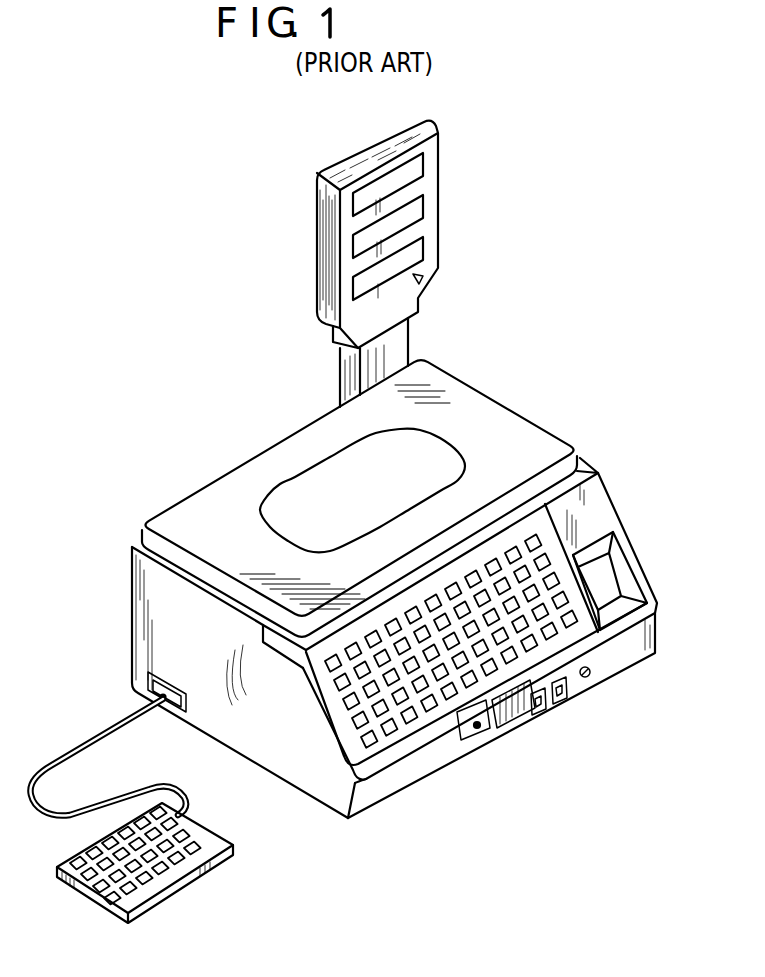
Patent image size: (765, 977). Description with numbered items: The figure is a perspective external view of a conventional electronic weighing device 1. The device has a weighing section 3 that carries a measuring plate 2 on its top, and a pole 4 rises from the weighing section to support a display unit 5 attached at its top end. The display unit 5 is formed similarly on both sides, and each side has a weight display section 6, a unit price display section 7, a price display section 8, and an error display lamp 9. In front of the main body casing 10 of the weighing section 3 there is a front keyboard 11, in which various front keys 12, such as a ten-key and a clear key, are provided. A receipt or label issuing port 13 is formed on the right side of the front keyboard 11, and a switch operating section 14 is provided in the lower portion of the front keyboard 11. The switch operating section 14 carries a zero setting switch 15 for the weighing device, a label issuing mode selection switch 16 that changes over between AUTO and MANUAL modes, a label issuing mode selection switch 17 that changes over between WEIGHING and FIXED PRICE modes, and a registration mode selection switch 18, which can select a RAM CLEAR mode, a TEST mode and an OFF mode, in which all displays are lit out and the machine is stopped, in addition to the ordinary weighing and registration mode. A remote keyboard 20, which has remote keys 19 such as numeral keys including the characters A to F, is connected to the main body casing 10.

The electronic weighing device 1 is at (505, 255).
The measuring plate 2 is at (323, 478).
The weighing section 3 is at (168, 506).
The pole 4 is at (403, 342).
The display unit 5 is at (314, 228).
The weight display section 6 is at (425, 167).
The unit price display section 7 is at (425, 208).
The price display section 8 is at (425, 248).
The error display lamp 9 is at (424, 280).
The main body casing 10 is at (141, 596).
The front keyboard 11 is at (372, 764).
The front keys 12 is at (410, 719).
The receipt or label issuing port 13 is at (626, 578).
The switch operating section 14 is at (648, 656).
The zero setting switch 15 is at (476, 733).
The label issuing mode selection switch 16 is at (537, 714).
The label issuing mode selection switch 17 is at (560, 704).
The registration mode selection switch 18 is at (588, 684).
The remote keys 19 is at (150, 890).
The remote keyboard 20 is at (211, 877).